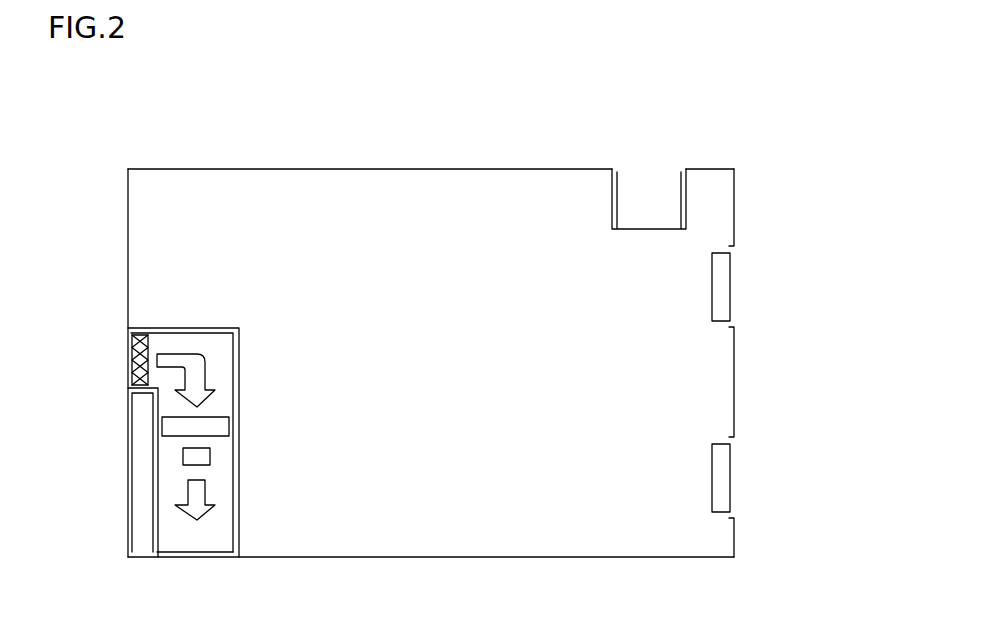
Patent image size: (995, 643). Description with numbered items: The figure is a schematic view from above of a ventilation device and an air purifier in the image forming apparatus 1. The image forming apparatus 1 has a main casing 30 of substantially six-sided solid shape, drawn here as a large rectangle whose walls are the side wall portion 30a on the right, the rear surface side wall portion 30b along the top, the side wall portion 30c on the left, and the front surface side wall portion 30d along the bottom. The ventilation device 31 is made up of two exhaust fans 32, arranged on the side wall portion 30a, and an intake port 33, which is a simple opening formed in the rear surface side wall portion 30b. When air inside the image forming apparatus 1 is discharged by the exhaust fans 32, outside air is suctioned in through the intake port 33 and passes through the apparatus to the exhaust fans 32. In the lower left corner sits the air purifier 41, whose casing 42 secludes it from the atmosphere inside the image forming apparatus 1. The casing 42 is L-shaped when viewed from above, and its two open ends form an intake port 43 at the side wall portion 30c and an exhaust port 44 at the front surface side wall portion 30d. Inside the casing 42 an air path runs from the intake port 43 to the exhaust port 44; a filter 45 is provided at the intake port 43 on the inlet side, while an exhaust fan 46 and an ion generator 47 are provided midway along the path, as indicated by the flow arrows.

The image forming apparatus 1 is at (440, 85).
The main casing 30 is at (380, 169).
The side wall portion 30a is at (735, 533).
The rear surface side wall portion 30b is at (548, 169).
The side wall portion 30c is at (128, 256).
The front surface side wall portion 30d is at (497, 557).
The ventilation device 31 is at (829, 135).
The exhaust fans 32 is at (722, 480).
The intake port 33 is at (660, 182).
The air purifier 41 is at (145, 474).
The casing 42 is at (239, 368).
The intake port 43 is at (128, 333).
The exhaust port 44 is at (236, 560).
The filter 45 is at (131, 358).
The exhaust fan 46 is at (223, 430).
The ion generator 47 is at (205, 458).